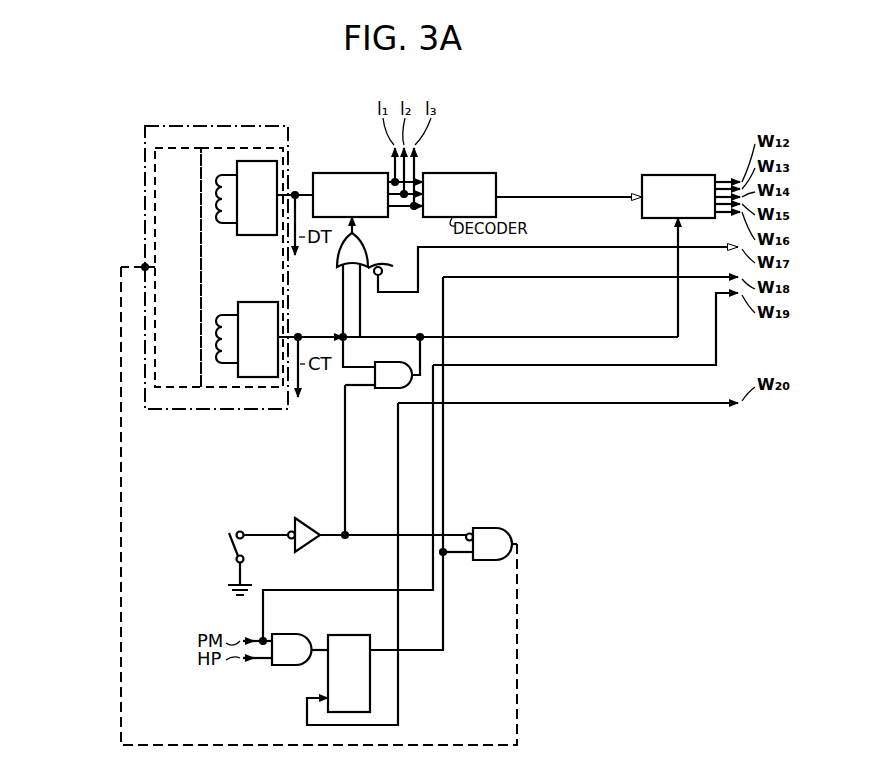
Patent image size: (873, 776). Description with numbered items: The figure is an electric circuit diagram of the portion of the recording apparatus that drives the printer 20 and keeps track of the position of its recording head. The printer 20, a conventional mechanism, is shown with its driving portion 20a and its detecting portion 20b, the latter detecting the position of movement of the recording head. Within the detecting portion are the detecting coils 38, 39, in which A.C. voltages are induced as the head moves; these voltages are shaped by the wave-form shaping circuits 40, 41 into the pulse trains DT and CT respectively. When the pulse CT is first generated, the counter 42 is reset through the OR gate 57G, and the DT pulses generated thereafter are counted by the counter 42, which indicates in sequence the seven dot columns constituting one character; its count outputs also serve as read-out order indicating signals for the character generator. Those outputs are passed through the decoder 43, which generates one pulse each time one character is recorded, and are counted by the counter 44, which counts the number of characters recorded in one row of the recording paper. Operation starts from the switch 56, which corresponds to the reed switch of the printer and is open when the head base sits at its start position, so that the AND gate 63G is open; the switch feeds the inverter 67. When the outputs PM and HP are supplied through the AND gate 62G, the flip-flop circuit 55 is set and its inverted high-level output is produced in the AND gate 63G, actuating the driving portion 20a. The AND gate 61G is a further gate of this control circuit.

The printer 20 is at (225, 126).
The driving portion 20a is at (157, 218).
The detecting portion 20b is at (260, 148).
The detecting coil 38 is at (218, 224).
The detecting coil 39 is at (223, 313).
The wave-form shaping circuit 40 is at (272, 178).
The wave-form shaping circuit 41 is at (282, 327).
The counter 42 is at (350, 179).
The decoder 43 is at (472, 178).
The counter 44 is at (687, 182).
The flip-flop circuit 55 is at (360, 635).
The switch 56 is at (214, 565).
The OR gate 57G is at (360, 247).
The AND gate 61G is at (385, 386).
The AND gate 62G is at (300, 634).
The AND gate 63G is at (505, 528).
The inverter 67 is at (314, 518).